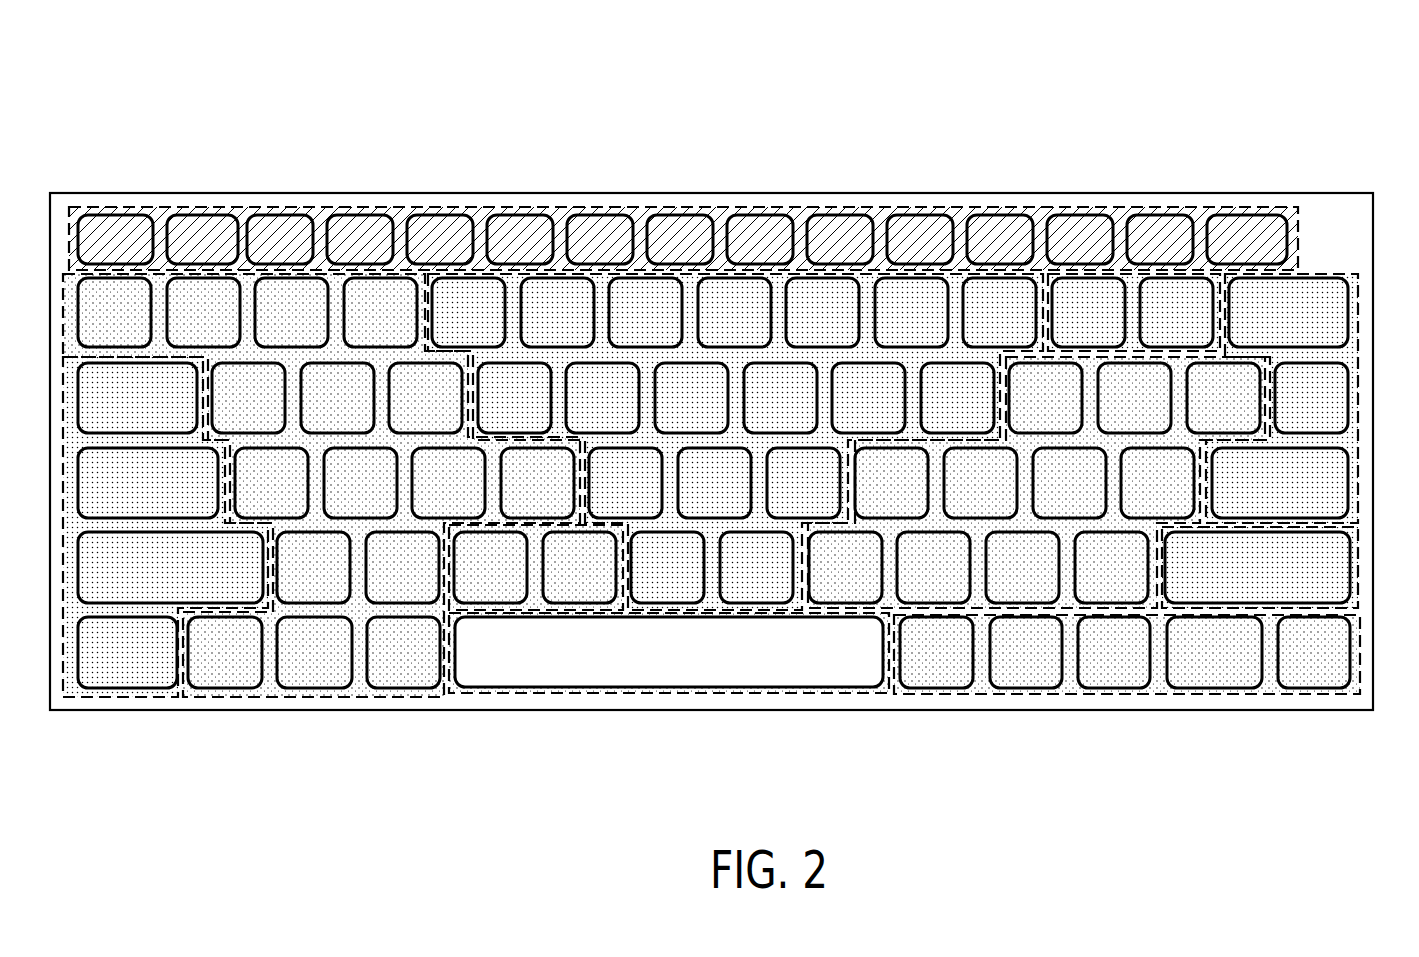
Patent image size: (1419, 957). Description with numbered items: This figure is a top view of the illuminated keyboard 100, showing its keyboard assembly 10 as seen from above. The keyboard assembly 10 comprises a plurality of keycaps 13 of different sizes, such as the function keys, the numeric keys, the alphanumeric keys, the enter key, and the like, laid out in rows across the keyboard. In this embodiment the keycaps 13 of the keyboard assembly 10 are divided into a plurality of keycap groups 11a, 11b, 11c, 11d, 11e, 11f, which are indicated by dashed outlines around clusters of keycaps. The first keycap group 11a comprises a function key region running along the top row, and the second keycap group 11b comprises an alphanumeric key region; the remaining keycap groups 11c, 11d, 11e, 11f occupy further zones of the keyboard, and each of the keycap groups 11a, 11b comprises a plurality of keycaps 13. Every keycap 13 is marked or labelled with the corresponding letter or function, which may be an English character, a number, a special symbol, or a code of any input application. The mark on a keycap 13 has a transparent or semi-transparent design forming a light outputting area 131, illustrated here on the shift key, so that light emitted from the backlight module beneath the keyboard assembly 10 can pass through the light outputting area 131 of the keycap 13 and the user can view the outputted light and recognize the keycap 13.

The illuminated keyboard 100 is at (185, 83).
The keyboard assembly 10 is at (437, 192).
The keycaps 13 is at (262, 217).
The first keycap group 11a is at (1299, 228).
The second keycap group 11b is at (335, 697).
The keycap group 11c is at (92, 697).
The keycap group 11d is at (713, 604).
The keycap group 11e is at (1163, 694).
The keycap group 11f is at (1358, 440).
The light outputting area 131 is at (1275, 561).